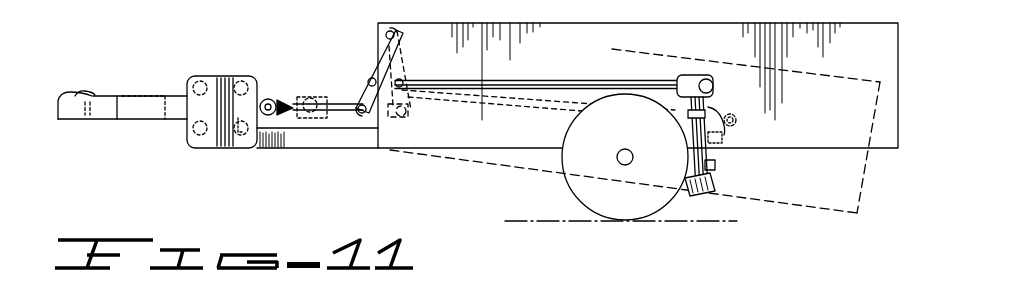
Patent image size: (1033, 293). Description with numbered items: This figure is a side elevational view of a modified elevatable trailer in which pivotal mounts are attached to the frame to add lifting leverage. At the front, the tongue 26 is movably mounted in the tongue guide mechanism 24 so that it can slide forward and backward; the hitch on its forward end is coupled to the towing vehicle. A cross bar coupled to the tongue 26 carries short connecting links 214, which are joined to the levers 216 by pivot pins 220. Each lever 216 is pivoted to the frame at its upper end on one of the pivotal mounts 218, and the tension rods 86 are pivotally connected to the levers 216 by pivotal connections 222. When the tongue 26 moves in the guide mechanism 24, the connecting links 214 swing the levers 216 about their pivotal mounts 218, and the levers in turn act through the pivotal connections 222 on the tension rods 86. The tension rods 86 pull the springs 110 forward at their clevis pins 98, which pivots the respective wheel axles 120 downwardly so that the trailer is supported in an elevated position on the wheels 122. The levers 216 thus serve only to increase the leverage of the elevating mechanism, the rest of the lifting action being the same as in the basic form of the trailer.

The tongue guide mechanism 24 is at (213, 150).
The tongue 26 is at (166, 119).
The tension rods 86 is at (448, 80).
The clevis pins 98 is at (715, 84).
The springs 110 is at (717, 112).
The wheel axles 120 is at (633, 158).
The wheels 122 is at (562, 162).
The connecting links 214 is at (322, 104).
The levers 216 is at (378, 57).
The pivotal mounts 218 is at (393, 30).
The pivot pins 220 is at (372, 117).
The pivotal connections 222 is at (370, 77).